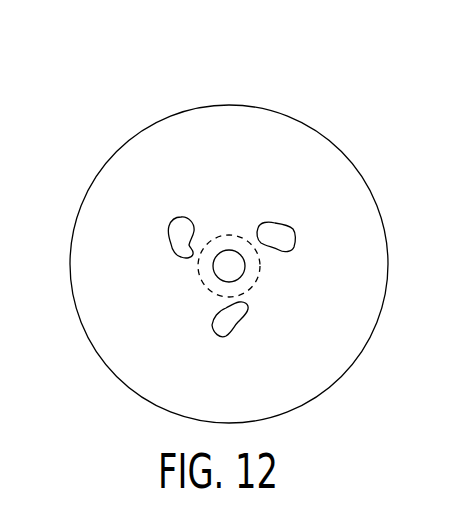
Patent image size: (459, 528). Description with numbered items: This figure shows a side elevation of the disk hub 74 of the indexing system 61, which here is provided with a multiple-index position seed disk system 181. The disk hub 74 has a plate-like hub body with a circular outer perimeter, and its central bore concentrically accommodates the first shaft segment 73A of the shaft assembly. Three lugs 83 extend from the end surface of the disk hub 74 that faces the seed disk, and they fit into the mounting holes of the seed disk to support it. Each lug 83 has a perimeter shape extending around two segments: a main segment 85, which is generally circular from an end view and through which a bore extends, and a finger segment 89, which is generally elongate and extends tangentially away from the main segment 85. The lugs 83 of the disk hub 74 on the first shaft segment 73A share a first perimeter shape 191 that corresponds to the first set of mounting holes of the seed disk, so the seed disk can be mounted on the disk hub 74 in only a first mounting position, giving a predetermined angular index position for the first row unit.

The indexing system 61 is at (270, 92).
The disk hub 74 is at (92, 140).
The multiple-index position seed disk system 181 is at (307, 102).
The first shaft segment 73A is at (210, 287).
The lug 83 is at (178, 216).
The main segment 85 is at (192, 225).
The finger segment 89 is at (179, 257).
The first perimeter shape 191 is at (168, 233).